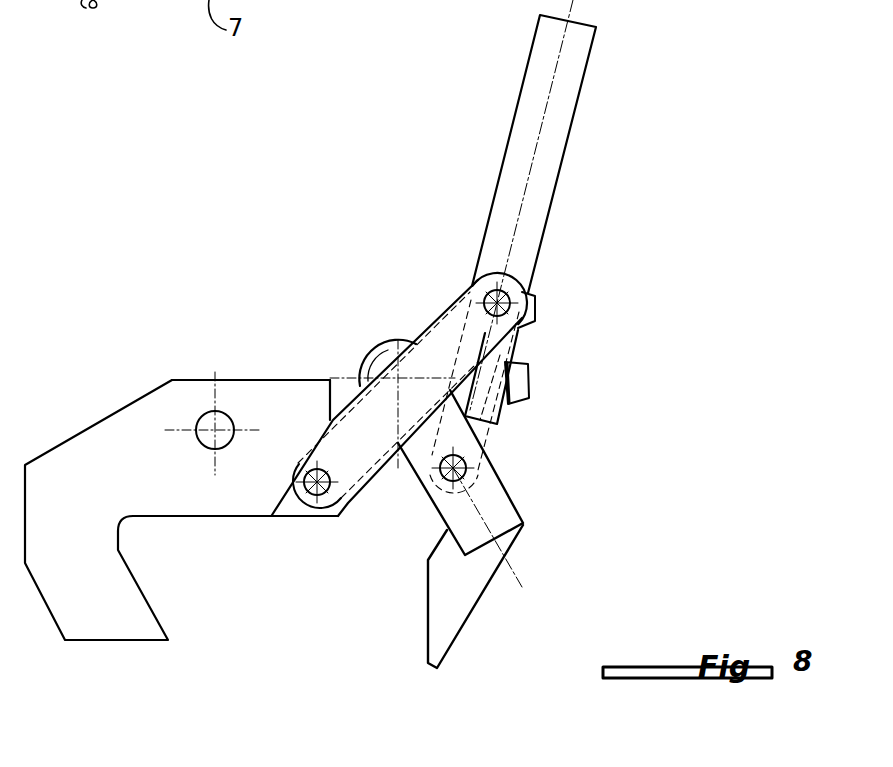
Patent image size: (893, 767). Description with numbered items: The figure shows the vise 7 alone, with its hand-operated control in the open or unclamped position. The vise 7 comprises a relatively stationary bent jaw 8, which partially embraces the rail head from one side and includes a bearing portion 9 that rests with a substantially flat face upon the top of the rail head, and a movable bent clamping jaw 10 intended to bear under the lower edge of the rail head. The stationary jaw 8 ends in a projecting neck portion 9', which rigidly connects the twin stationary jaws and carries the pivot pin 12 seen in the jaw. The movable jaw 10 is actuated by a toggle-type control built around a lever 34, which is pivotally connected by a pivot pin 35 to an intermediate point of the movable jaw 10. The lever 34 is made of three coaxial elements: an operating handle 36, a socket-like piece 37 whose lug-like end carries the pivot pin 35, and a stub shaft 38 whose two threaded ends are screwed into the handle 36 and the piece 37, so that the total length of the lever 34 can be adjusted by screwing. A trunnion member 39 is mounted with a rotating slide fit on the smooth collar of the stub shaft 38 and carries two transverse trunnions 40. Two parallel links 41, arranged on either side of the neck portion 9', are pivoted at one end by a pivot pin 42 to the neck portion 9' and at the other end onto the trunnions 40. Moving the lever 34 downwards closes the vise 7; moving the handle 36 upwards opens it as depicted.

The vise 7 is at (210, 598).
The relatively stationary jaw 8 is at (75, 612).
The bearing portion 9 is at (251, 334).
The projecting neck portion 9' is at (388, 372).
The movable clamping jaw 10 is at (453, 597).
The pivot pin 12 is at (207, 425).
The lever 34 is at (573, 148).
The pivot pin 35 is at (468, 468).
The operating handle 36 is at (571, 77).
The socket-like piece 37 is at (495, 410).
The stub shaft 38 is at (502, 348).
The trunnion member 39 is at (535, 308).
The trunnions 40 is at (520, 290).
The links 41 is at (372, 455).
The pivot pin 42 is at (317, 496).